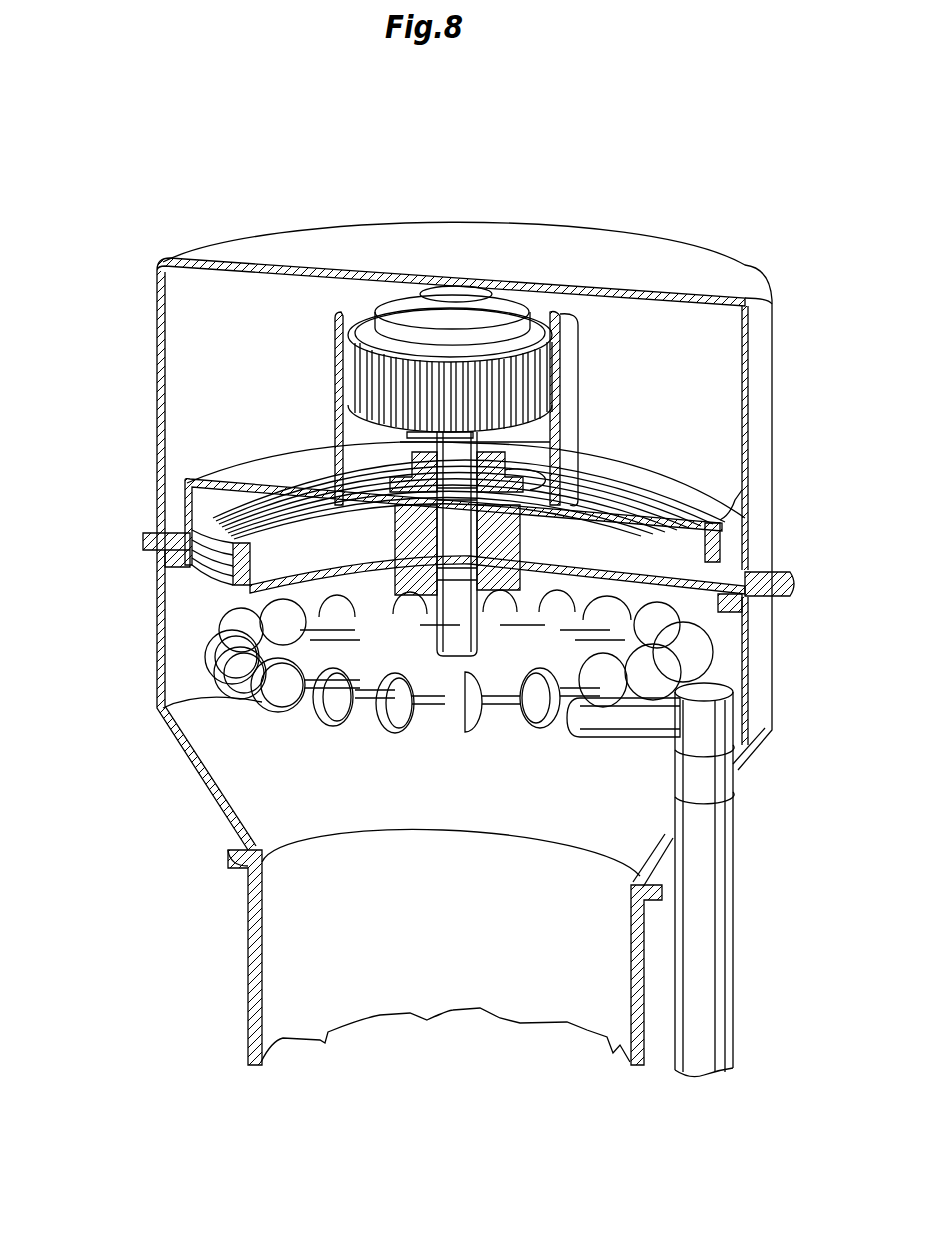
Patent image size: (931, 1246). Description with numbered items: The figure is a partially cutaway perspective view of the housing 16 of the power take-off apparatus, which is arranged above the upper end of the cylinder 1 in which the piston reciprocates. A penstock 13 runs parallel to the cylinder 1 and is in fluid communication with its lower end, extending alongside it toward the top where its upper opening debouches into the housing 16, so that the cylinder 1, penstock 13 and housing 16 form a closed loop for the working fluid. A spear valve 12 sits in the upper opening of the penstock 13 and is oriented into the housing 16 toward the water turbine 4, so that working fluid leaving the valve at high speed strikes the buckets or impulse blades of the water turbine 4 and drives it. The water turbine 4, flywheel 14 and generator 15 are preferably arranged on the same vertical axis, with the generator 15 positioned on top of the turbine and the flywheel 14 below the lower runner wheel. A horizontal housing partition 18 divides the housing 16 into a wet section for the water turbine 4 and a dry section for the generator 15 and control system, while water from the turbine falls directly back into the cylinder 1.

The cylinder 1 is at (252, 925).
The water turbine 4 is at (290, 690).
The spear valve 12 is at (617, 713).
The penstock 13 is at (710, 950).
The flywheel 14 is at (210, 565).
The generator 15 is at (455, 375).
The housing 16 is at (160, 336).
The horizontal housing partition 18 is at (273, 465).